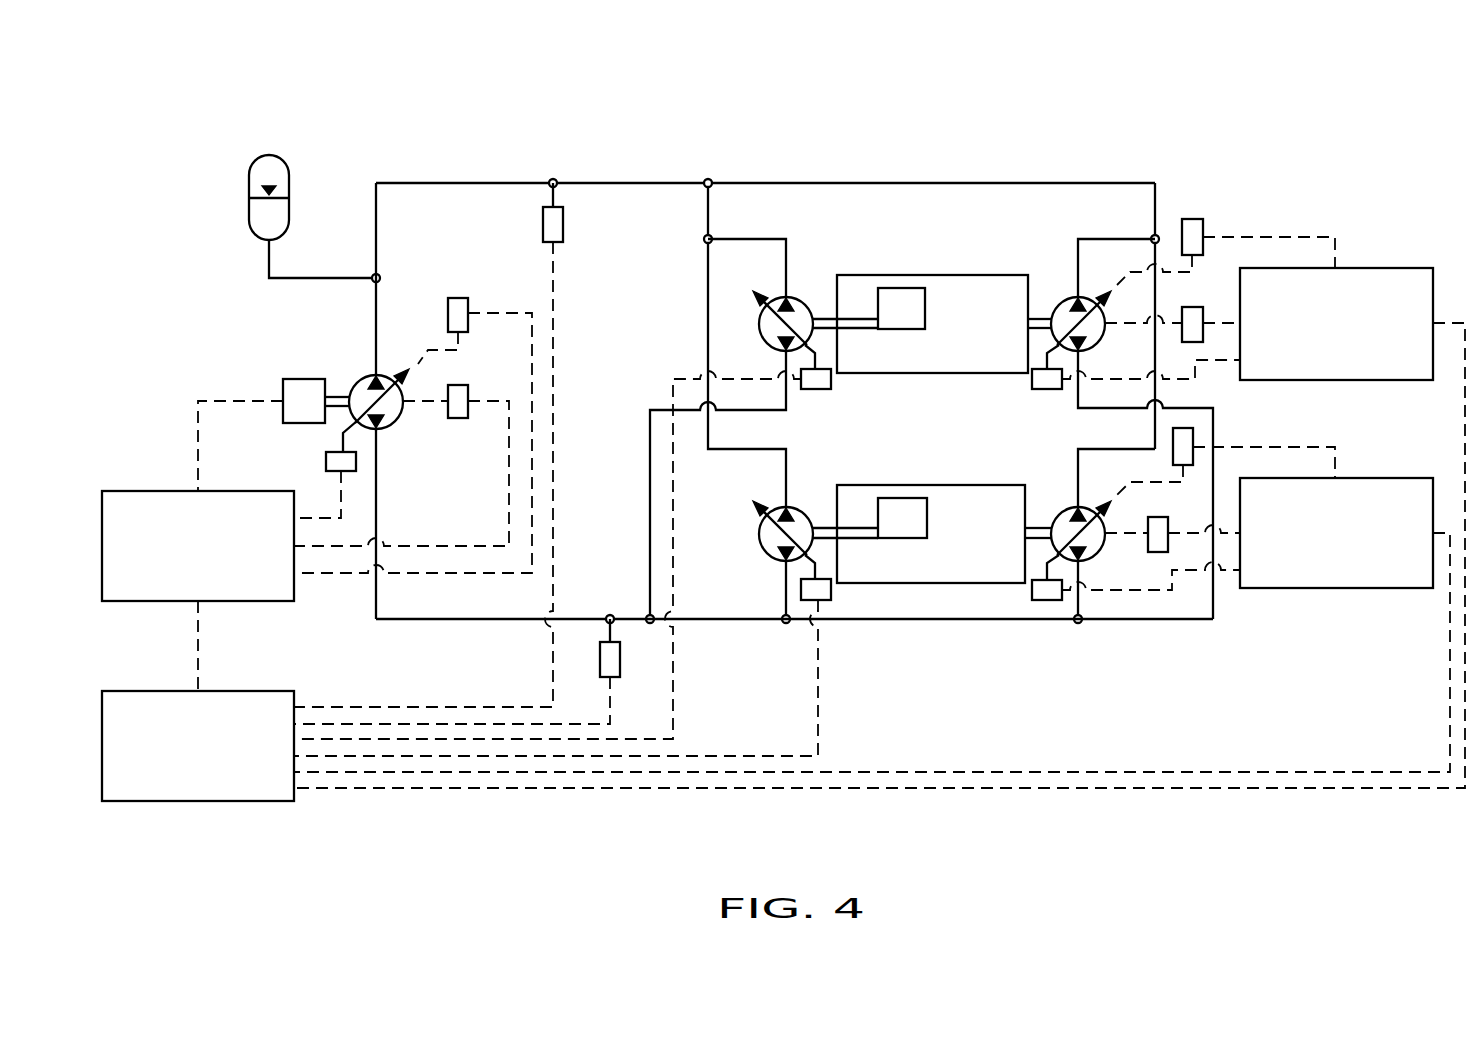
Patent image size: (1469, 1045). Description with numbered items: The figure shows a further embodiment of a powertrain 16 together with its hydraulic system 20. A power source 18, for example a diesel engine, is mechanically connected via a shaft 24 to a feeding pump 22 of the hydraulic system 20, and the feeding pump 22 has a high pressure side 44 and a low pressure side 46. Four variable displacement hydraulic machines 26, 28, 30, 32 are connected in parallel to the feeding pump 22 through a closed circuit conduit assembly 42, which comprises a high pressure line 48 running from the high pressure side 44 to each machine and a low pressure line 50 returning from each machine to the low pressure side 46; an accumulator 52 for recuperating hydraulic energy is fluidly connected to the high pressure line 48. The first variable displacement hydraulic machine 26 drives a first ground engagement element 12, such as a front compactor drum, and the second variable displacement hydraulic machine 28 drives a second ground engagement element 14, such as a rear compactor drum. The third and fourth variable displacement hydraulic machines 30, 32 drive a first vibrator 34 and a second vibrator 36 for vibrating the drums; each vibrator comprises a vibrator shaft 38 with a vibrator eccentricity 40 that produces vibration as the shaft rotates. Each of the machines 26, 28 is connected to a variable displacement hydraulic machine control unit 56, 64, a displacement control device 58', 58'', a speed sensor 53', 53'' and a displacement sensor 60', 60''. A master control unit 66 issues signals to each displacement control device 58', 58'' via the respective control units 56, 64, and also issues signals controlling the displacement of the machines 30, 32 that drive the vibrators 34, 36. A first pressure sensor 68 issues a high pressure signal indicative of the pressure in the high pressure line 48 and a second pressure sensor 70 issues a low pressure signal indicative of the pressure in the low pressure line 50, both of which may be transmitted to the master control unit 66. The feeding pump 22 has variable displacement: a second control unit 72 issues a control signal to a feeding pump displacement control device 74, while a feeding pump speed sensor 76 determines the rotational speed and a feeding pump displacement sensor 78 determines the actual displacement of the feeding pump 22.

The first ground engagement element 12 is at (968, 258).
The second ground engagement element 14 is at (905, 470).
The powertrain 16 is at (1113, 100).
The power source 18 is at (252, 378).
The hydraulic system 20 is at (578, 100).
The feeding pump 22 is at (410, 420).
The shaft 24 is at (338, 392).
The first variable displacement hydraulic machine 26 is at (1060, 290).
The second variable displacement hydraulic machine 28 is at (1055, 500).
The third variable displacement hydraulic machine 30 is at (758, 327).
The fourth variable displacement hydraulic machine 32 is at (758, 535).
The first vibrator 34 is at (912, 347).
The second vibrator 36 is at (912, 555).
The vibrator shaft 38 is at (858, 318).
The vibrator eccentricity 40 is at (905, 288).
The circuit conduit assembly 42 is at (426, 150).
The high pressure side 44 is at (380, 376).
The low pressure side 46 is at (380, 428).
The high pressure line 48 is at (643, 183).
The low pressure line 50 is at (435, 620).
The accumulator 52 is at (249, 190).
The speed sensor 53' is at (1211, 253).
The speed sensor 53'' is at (1180, 596).
The variable displacement hydraulic machine control unit 56 is at (1340, 380).
The displacement control device 58' is at (1121, 398).
The displacement control device 58'' is at (1136, 619).
The displacement sensor 60' is at (1226, 224).
The displacement sensor 60'' is at (1226, 450).
The variable displacement hydraulic machine control unit 64 is at (1340, 588).
The master control unit 66 is at (150, 691).
The first pressure sensor 68 is at (563, 225).
The second pressure sensor 70 is at (600, 655).
The second control unit 72 is at (150, 491).
The feeding pump displacement control device 74 is at (326, 462).
The feeding pump speed sensor 76 is at (468, 390).
The feeding pump displacement sensor 78 is at (468, 305).